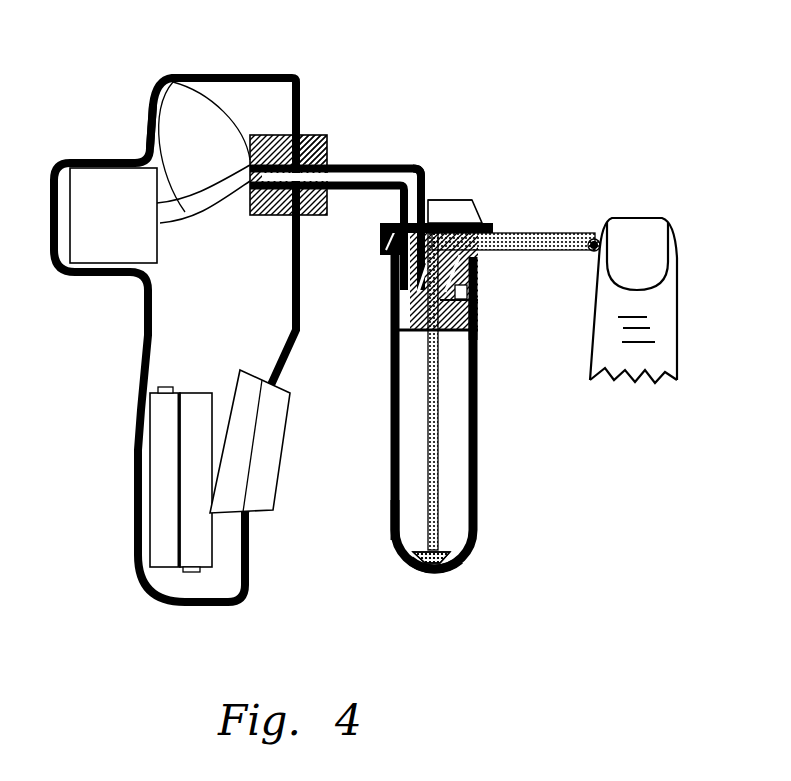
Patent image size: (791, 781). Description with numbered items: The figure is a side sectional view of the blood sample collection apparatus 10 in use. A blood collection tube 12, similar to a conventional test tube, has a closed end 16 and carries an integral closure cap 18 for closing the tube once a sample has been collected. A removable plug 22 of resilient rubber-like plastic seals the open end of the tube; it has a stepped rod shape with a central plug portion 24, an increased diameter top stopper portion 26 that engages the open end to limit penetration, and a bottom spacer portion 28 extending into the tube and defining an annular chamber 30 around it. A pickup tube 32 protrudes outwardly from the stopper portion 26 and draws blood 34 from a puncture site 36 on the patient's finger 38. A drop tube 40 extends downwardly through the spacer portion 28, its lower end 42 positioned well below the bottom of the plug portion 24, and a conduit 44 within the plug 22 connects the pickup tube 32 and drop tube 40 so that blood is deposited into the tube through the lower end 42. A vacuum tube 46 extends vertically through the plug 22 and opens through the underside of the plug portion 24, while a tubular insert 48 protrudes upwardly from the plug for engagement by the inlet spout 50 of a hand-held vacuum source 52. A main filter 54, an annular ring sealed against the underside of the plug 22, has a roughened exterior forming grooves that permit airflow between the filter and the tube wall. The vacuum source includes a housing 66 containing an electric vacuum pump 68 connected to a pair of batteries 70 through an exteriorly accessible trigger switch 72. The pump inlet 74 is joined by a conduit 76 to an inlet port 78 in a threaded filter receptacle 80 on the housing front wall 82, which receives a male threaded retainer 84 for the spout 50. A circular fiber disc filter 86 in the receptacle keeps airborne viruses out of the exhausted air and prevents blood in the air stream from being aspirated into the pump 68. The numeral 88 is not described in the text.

The blood sample collection apparatus 10 is at (387, 114).
The blood collection tube 12 is at (472, 363).
The closed end 16 is at (453, 570).
The integral closure cap 18 is at (447, 201).
The removable plug 22 is at (489, 223).
The central plug portion 24 is at (480, 265).
The top stopper portion 26 is at (432, 199).
The bottom spacer portion 28 is at (455, 297).
The annular chamber 30 is at (462, 295).
The pickup tube 32 is at (513, 237).
The blood 34 is at (590, 246).
The puncture site 36 is at (596, 256).
The finger 38 is at (610, 348).
The drop tube 40 is at (437, 390).
The lower end 42 is at (433, 550).
The conduit 44 is at (496, 218).
The vacuum tube 46 is at (401, 256).
The tubular insert 48 is at (410, 211).
The inlet spout 50 is at (348, 167).
The hand-held vacuum source 52 is at (184, 77).
The main filter 54 is at (477, 330).
The housing 66 is at (226, 75).
The electric vacuum pump 68 is at (108, 243).
The batteries 70 is at (195, 553).
The trigger switch 72 is at (250, 497).
The inlet 74 is at (158, 227).
The conduit 76 is at (147, 140).
The inlet port 78 is at (173, 81).
The filter receptacle 80 is at (277, 136).
The housing front wall 82 is at (300, 103).
The male threaded retainer 84 is at (310, 136).
The circular fiber disc filter 86 is at (267, 214).
The tube lower wall 88 is at (390, 548).